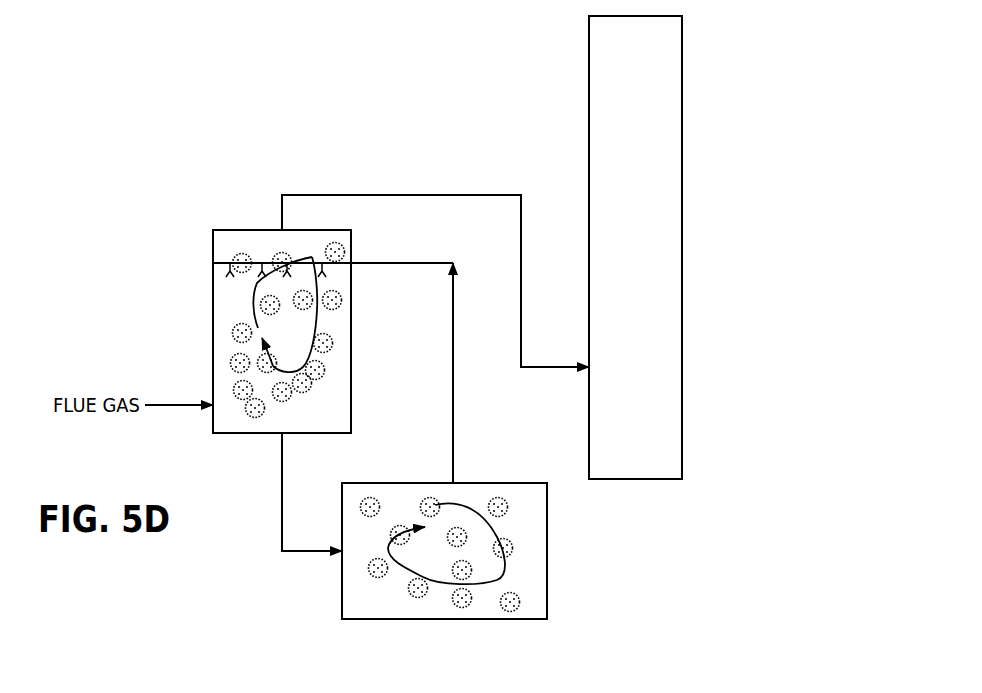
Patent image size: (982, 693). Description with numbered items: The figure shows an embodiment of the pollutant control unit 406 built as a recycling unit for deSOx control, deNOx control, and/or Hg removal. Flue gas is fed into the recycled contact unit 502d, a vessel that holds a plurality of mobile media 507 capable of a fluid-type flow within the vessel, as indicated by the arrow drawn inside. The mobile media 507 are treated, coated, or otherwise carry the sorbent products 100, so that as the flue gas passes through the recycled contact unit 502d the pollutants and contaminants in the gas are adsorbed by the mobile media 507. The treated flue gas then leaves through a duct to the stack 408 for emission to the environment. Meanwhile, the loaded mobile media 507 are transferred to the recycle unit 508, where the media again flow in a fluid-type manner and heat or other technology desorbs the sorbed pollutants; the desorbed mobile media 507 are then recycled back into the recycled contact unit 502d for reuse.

The pollutant control unit 406 is at (228, 137).
The recycled contact unit 502d is at (247, 230).
The mobile media 507 is at (230, 371).
The sorbent products 100 is at (258, 408).
The recycle unit 508 is at (547, 578).
The stack 408 is at (683, 100).